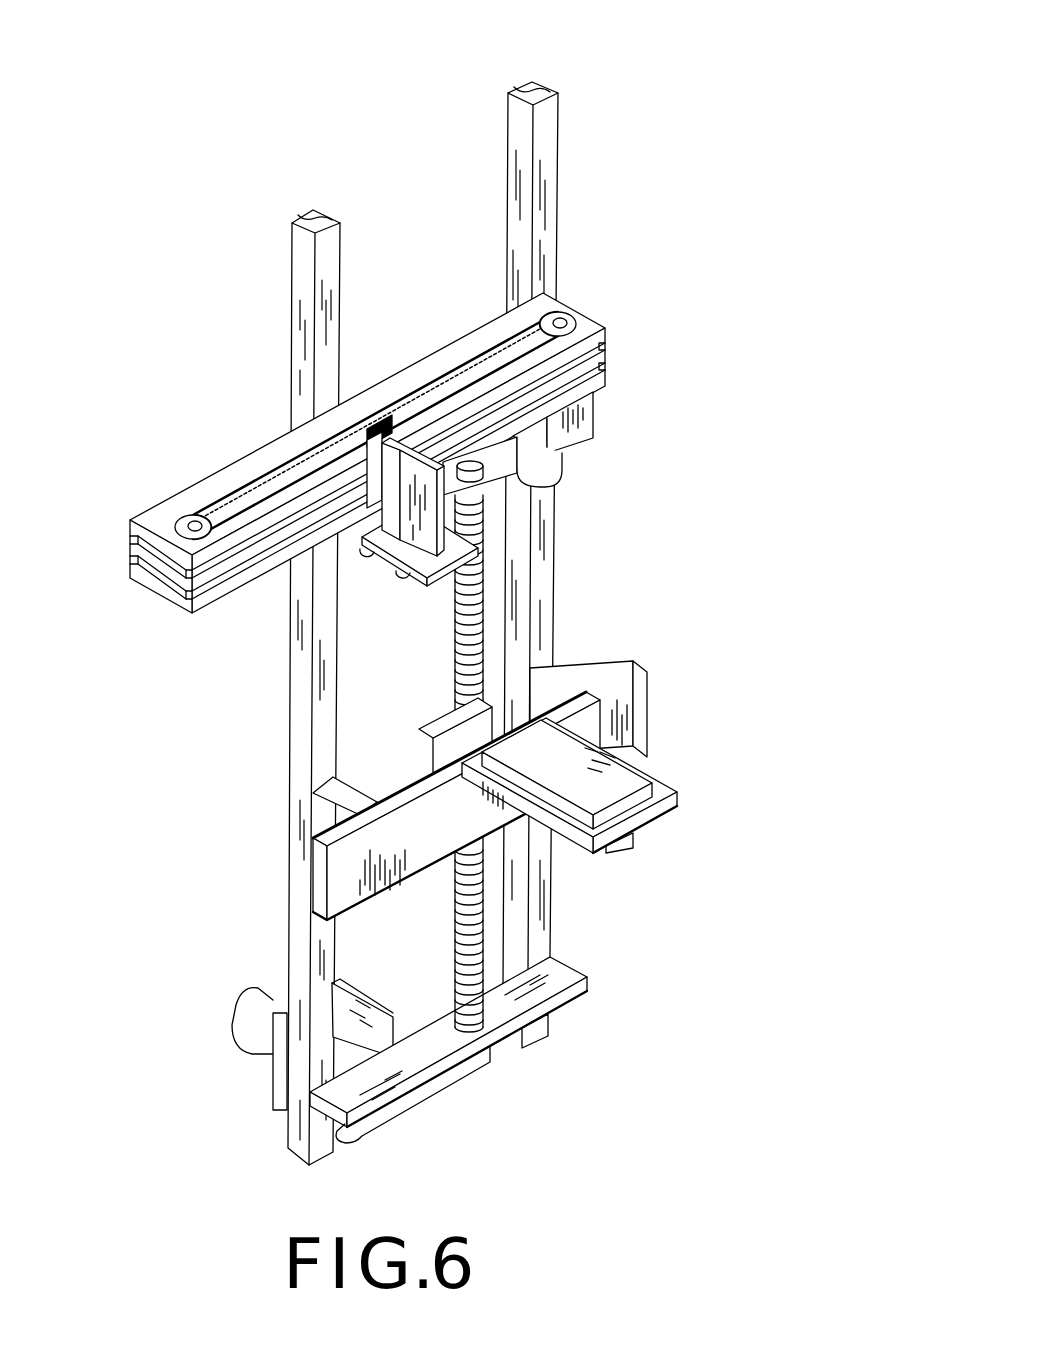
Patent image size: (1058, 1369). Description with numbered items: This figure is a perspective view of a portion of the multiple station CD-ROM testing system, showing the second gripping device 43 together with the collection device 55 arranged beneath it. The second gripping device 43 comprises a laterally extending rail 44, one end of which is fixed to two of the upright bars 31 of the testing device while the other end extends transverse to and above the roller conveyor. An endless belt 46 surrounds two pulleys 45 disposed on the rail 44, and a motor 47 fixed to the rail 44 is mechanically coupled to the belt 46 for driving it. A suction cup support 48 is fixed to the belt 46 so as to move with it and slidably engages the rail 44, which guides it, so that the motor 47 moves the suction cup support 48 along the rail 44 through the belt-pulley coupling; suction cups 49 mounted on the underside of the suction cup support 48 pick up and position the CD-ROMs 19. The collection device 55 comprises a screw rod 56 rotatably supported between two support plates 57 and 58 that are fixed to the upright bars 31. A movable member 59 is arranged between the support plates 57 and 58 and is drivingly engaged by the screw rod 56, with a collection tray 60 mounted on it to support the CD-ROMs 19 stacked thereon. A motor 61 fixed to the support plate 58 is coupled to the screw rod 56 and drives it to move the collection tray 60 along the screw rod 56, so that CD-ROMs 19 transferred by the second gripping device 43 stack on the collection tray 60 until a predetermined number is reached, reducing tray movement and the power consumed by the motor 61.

The CD-ROMs 19 is at (753, 713).
The upright bars 31 is at (535, 82).
The second gripping device 43 is at (438, 436).
The rail 44 is at (163, 512).
The pulleys 45 is at (568, 316).
The endless belt 46 is at (283, 466).
The motor 47 is at (563, 457).
The suction cup support 48 is at (405, 558).
The suction cups 49 is at (413, 543).
The collection device 55 is at (624, 809).
The screw rod 56 is at (472, 972).
The support plate 57 is at (488, 490).
The support plate 58 is at (420, 1050).
The movable member 59 is at (628, 712).
The collection tray 60 is at (605, 842).
The motor 61 is at (258, 1003).